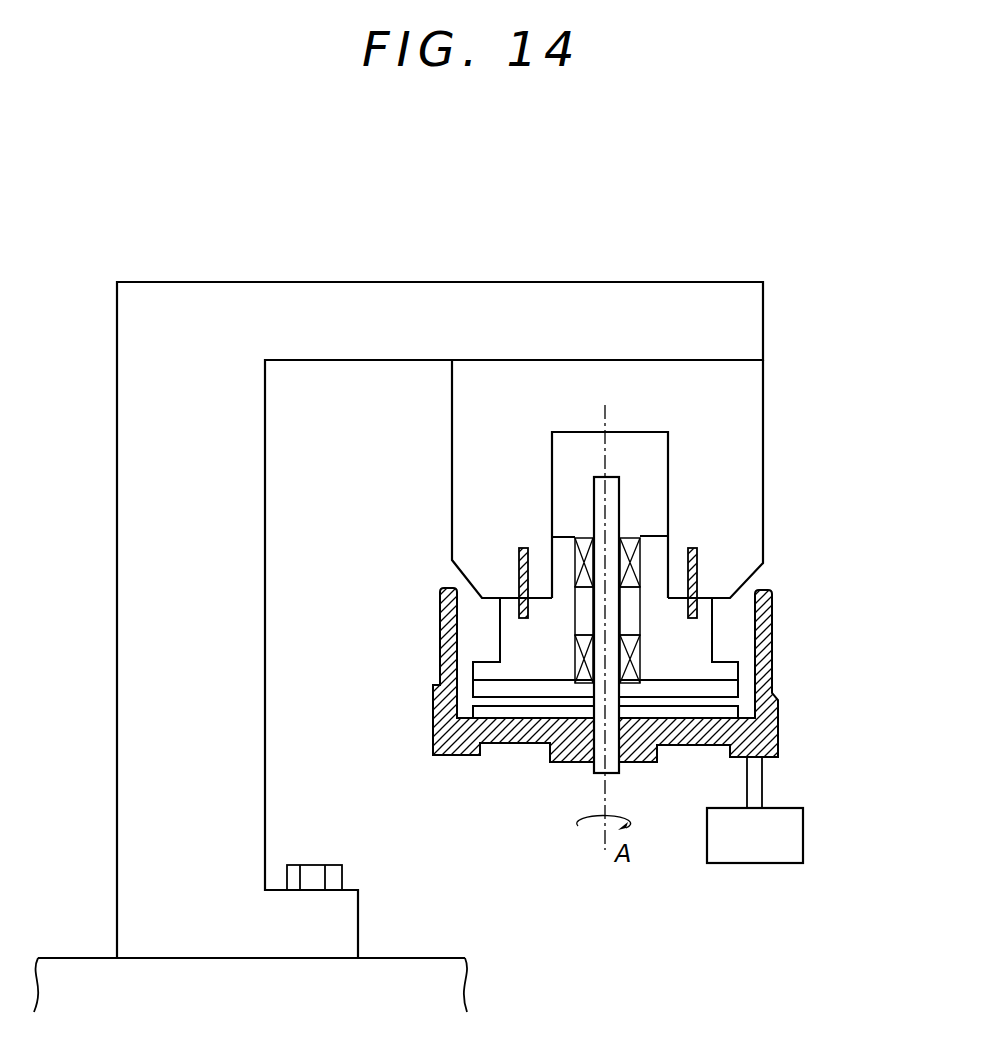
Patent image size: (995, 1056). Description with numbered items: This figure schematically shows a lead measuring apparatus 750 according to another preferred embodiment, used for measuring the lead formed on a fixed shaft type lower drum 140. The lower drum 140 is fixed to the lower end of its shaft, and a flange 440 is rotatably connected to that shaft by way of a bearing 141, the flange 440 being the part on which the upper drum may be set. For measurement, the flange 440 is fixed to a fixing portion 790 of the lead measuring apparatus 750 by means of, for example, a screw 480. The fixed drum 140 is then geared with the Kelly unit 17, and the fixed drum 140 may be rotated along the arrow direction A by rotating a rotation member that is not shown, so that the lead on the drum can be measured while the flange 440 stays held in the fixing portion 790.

The lead measuring apparatus 750 is at (640, 269).
The fixing portion 790 is at (763, 377).
The bearing 141 is at (628, 535).
The screw 480 is at (519, 562).
The flange 440 is at (668, 643).
The lower drum 140 is at (441, 760).
The Kelly unit 17 is at (803, 830).